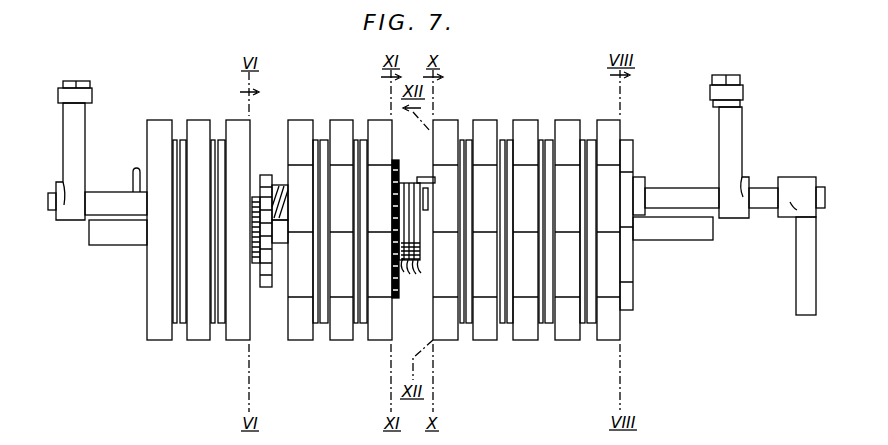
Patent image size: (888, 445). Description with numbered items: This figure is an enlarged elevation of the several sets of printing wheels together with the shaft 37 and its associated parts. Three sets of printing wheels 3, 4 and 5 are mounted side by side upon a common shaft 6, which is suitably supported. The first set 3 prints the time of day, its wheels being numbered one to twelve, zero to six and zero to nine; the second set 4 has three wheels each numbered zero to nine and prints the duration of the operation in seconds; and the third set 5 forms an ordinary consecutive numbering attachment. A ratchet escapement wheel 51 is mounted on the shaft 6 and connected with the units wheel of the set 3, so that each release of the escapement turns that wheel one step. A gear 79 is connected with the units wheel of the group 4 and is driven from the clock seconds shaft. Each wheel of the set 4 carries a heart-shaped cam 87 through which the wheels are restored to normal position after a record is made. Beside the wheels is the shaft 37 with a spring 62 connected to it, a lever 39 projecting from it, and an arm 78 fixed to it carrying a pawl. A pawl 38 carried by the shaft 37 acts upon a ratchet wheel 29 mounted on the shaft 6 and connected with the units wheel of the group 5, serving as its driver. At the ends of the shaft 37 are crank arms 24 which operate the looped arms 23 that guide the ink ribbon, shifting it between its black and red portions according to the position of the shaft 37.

The first set of printing wheels 3 is at (258, 348).
The second set of printing wheels 4 is at (397, 348).
The third set of printing wheels 5 is at (632, 348).
The common shaft 6 is at (107, 247).
The arms 23 is at (70, 86).
The crank arms 24 is at (66, 129).
The ratchet wheel 29 is at (628, 310).
The shaft 37 is at (762, 185).
The pawl 38 is at (643, 175).
The lever 39 is at (805, 317).
The ratchet escapement wheel 51 is at (266, 173).
The spring 62 is at (137, 188).
The arm 78 is at (421, 177).
The gear 79 is at (398, 298).
The heart-shaped cam 87 is at (412, 267).